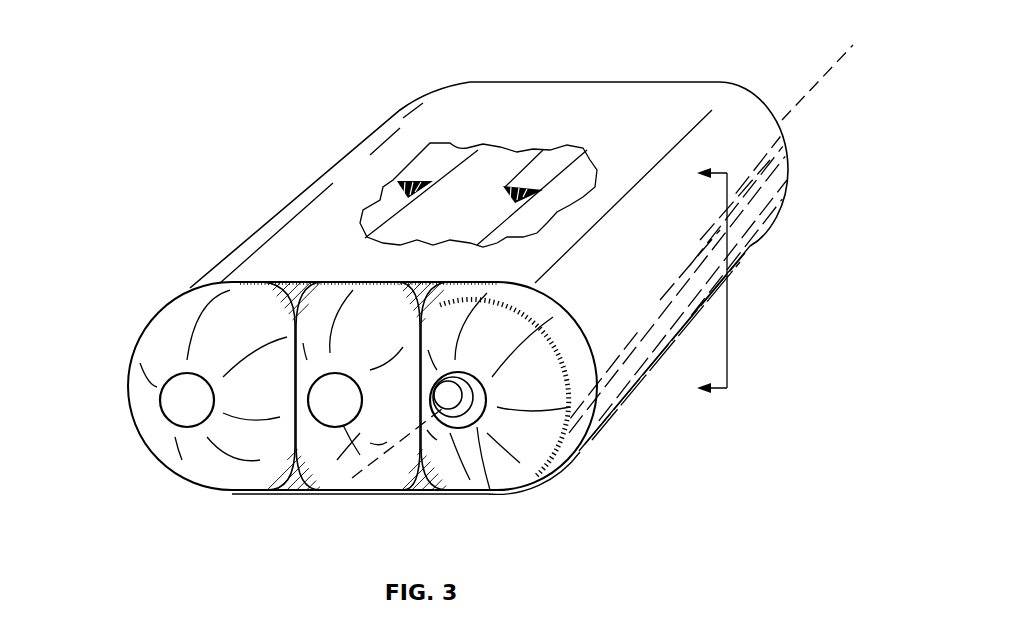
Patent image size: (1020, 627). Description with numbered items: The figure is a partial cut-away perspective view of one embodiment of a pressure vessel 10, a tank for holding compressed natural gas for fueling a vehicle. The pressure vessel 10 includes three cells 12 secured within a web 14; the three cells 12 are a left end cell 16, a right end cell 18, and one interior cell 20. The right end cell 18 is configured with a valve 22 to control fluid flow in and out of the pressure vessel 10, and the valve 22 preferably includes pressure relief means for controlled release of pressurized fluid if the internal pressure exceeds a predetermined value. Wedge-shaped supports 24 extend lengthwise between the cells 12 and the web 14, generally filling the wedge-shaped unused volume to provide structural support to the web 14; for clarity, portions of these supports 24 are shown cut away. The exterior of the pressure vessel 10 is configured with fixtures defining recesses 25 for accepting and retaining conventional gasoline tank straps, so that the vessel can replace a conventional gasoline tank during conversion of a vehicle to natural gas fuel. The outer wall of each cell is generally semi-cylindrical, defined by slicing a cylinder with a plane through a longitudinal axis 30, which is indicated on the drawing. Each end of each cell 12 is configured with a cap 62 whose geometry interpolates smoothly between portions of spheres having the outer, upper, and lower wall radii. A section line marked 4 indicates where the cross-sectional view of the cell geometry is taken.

The pressure vessel 10 is at (268, 128).
The cells 12 is at (150, 418).
The web 14 is at (723, 95).
The left end cell 16 is at (143, 330).
The right end cell 18 is at (570, 452).
The interior cell 20 is at (386, 477).
The valve 22 is at (460, 378).
The wedge-shaped supports 24 is at (555, 167).
The recesses 25 is at (752, 250).
The longitudinal axis 30 is at (818, 87).
The cap 62 is at (185, 408).
The section line 4- 4 is at (701, 282).